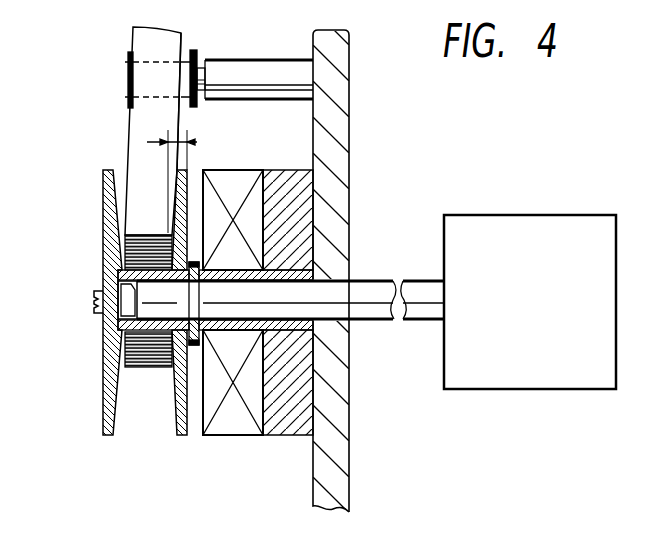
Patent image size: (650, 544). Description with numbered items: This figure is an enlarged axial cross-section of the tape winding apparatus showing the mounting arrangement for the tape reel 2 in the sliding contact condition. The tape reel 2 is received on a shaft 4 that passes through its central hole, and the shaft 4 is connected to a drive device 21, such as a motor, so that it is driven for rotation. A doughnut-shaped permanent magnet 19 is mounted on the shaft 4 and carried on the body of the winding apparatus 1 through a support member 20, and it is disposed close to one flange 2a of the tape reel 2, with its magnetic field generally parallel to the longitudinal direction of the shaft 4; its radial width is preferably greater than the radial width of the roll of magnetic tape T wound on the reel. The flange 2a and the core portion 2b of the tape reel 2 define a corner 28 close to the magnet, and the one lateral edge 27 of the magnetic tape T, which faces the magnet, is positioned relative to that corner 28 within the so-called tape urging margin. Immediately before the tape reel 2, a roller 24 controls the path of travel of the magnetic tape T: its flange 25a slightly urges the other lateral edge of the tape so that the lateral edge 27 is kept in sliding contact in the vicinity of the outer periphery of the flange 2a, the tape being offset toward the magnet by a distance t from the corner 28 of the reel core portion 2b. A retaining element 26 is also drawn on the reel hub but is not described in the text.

The winding apparatus 1 is at (336, 477).
The tape reel 2 is at (105, 270).
The flange 2a is at (185, 403).
The core portion 2b is at (152, 330).
The shaft 4 is at (372, 292).
The permanent magnet 19 is at (235, 418).
The support member 20 is at (285, 413).
The drive device 21 is at (488, 225).
The roller 24 is at (190, 101).
The flange 25a is at (128, 80).
The snap ring 26 is at (92, 298).
The lateral edge 27 is at (180, 163).
The corner 28 is at (148, 289).
The magnetic tape T is at (147, 47).
The offset distance t is at (172, 176).